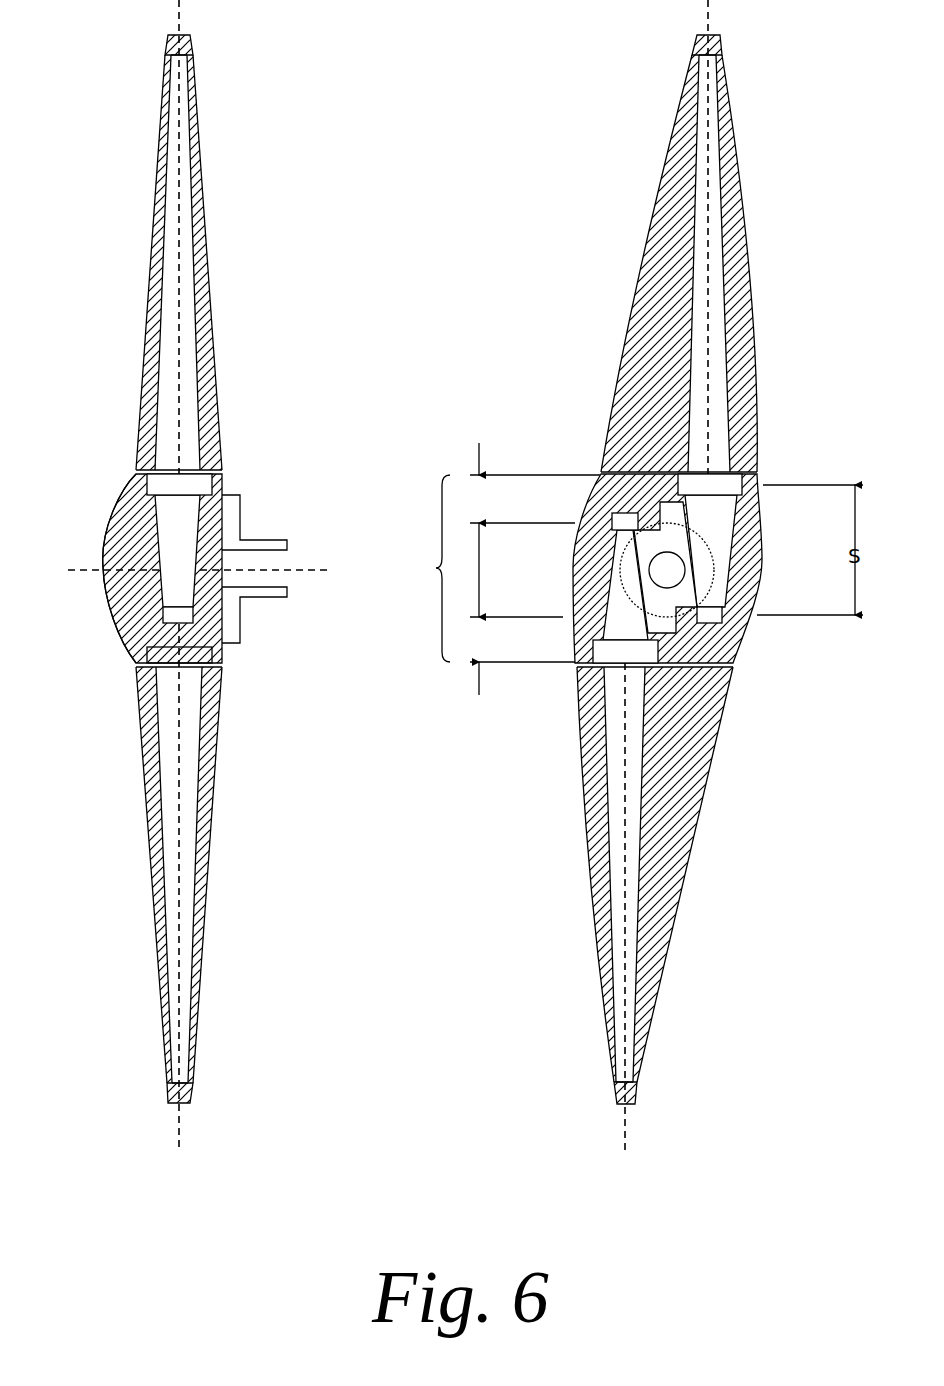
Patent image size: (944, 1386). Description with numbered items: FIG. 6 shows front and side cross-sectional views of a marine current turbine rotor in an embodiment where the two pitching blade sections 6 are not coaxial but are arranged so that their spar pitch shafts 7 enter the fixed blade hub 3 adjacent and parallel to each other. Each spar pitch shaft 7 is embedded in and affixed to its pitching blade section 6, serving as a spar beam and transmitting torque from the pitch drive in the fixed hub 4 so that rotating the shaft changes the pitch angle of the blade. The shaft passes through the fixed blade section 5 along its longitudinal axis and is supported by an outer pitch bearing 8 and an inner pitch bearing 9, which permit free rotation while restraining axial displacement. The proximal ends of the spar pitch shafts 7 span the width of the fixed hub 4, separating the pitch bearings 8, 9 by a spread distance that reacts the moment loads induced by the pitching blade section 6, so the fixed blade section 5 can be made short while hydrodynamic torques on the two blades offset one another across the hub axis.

The fixed blade hub 3 is at (433, 568).
The fixed hub 4 is at (105, 595).
The fixed blade section 5 is at (535, 569).
The pitching blade section 6 is at (210, 200).
The spar pitch shaft 7 is at (688, 990).
The outer pitch bearing 8 is at (215, 482).
The inner pitch bearing 9 is at (147, 638).